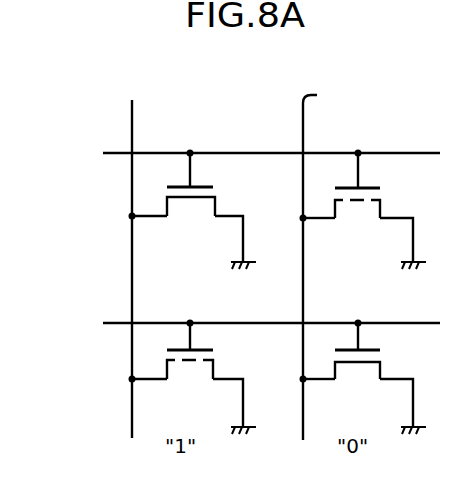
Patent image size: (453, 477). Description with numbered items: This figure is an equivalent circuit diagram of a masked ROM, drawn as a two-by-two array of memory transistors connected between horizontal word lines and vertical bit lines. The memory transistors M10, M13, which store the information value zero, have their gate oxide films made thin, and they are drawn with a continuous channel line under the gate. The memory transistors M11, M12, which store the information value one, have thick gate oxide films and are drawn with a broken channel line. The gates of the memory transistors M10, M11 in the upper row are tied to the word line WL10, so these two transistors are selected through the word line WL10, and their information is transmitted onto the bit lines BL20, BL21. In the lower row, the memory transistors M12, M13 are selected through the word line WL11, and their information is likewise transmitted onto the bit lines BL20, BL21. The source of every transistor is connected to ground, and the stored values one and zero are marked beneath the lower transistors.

The word line WL10 is at (241, 154).
The word line WL11 is at (233, 324).
The bit line BL20 is at (158, 260).
The bit line BL21 is at (335, 261).
The memory transistor M10 is at (193, 210).
The memory transistor M11 is at (363, 210).
The memory transistor M12 is at (193, 377).
The memory transistor M13 is at (363, 377).